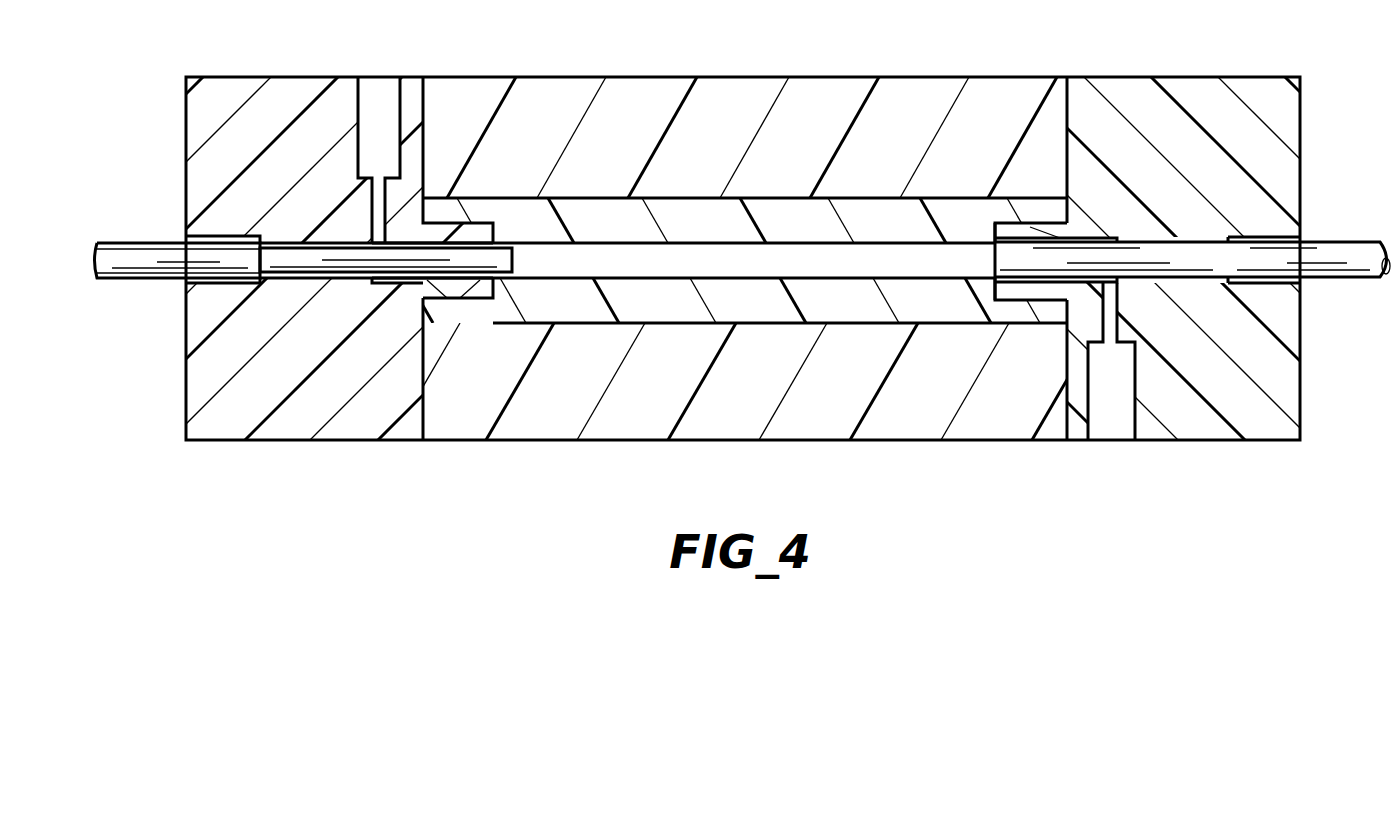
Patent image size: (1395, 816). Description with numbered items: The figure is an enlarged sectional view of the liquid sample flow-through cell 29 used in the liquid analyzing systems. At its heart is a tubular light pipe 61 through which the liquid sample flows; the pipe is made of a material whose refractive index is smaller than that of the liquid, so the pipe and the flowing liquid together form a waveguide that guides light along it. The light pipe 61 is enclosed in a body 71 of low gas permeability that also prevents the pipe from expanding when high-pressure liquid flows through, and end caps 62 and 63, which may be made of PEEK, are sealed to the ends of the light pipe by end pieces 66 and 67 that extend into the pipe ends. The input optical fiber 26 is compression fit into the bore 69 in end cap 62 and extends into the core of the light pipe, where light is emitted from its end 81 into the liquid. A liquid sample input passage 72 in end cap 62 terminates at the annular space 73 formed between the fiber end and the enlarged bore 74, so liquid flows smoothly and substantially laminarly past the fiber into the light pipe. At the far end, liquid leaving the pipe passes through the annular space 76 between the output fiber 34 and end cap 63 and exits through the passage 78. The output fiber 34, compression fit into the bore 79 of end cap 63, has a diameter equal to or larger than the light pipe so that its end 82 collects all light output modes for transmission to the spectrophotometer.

The liquid sample flow-through cell 29 is at (1112, 55).
The end cap 62 is at (293, 98).
The liquid sample input passage 72 is at (388, 125).
The body 71 is at (738, 110).
The end piece 67 is at (1007, 227).
The end piece 66 is at (480, 290).
The light pipe 61 is at (745, 330).
The end cap 63 is at (1190, 410).
The passage 78 is at (1108, 393).
The bore 69 is at (290, 243).
The bore 79 is at (1203, 242).
The input optical fiber 26 is at (303, 260).
The output fiber 34 is at (1173, 260).
The end of the output optical fiber 82 is at (993, 260).
The end of the fiber 81 is at (523, 250).
The enlarged bore 74 is at (380, 275).
The annular space 73 is at (440, 280).
The annular space 76 is at (1060, 240).